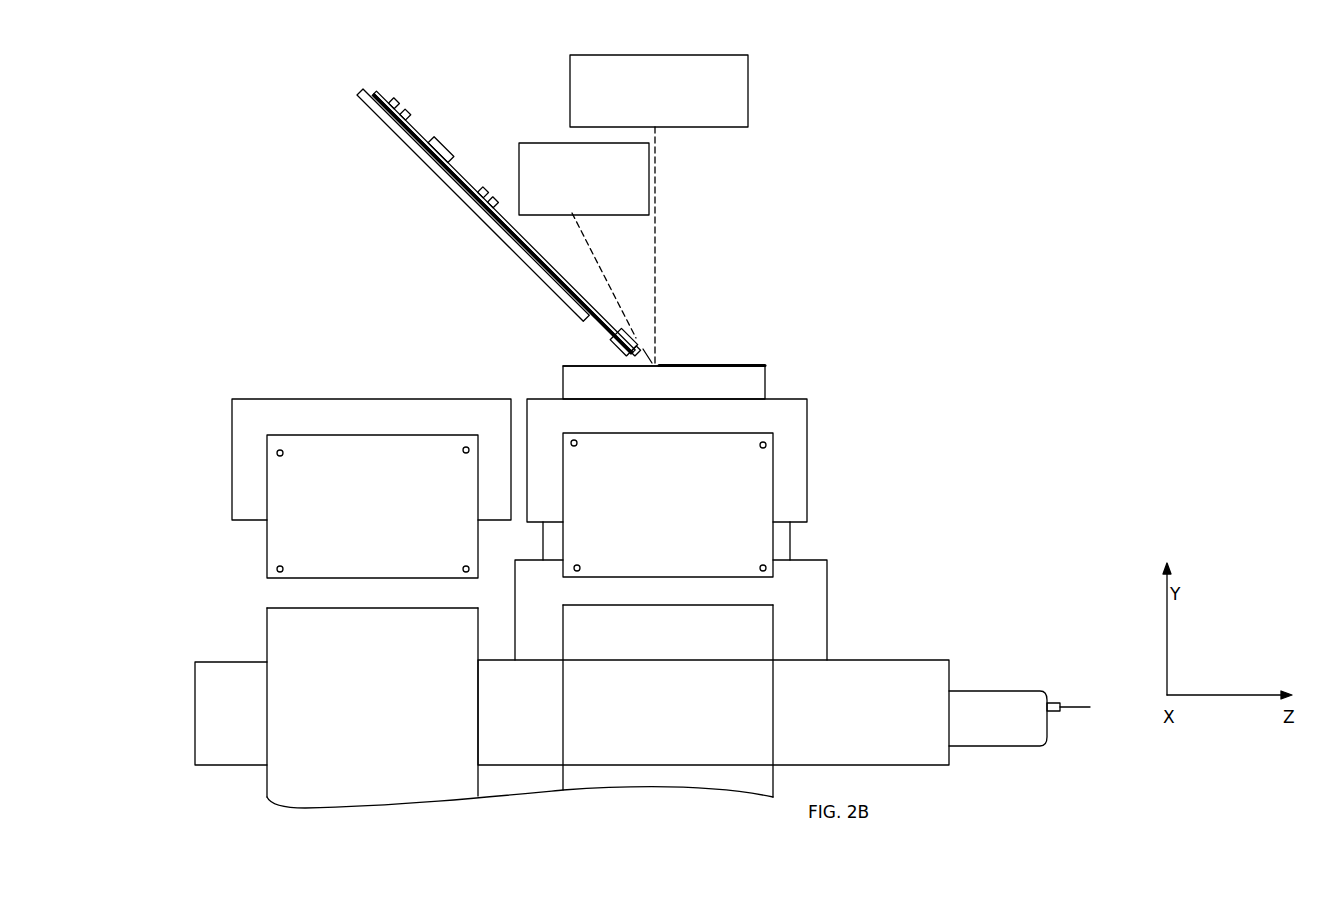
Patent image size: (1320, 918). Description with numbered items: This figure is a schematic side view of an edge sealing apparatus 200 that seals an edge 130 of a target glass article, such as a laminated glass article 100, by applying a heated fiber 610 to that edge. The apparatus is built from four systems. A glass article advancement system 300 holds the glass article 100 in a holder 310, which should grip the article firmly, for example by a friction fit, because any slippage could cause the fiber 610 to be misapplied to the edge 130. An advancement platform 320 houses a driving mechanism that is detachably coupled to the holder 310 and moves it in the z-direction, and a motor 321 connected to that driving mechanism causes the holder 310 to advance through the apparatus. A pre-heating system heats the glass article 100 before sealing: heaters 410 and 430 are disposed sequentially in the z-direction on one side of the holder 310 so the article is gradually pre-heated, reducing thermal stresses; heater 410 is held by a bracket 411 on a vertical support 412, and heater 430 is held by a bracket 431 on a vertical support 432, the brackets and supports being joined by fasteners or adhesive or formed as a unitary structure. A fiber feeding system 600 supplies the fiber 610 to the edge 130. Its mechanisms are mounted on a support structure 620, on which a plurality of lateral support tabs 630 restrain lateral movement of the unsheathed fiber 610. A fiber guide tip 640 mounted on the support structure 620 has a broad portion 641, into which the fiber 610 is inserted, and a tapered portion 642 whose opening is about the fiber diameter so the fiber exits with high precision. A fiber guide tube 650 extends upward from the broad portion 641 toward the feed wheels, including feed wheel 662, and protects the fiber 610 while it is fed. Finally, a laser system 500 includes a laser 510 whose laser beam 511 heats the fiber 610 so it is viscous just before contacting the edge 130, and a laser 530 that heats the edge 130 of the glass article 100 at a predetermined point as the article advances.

The laminated glass article 100 is at (758, 386).
The edge 130 is at (578, 366).
The edge sealing apparatus 200 is at (856, 110).
The glass article advancement system 300 is at (791, 666).
The holder 310 is at (812, 620).
The advancement platform 320 is at (950, 750).
The motor 321 is at (1046, 728).
The heater 410 is at (790, 455).
The bracket 411 is at (755, 488).
The vertical support 412 is at (580, 733).
The heater 430 is at (245, 460).
The bracket 431 is at (285, 553).
The vertical support 432 is at (296, 710).
The laser system 500 is at (642, 209).
The laser 510 is at (649, 178).
The laser beam 511 is at (600, 243).
The laser 530 is at (748, 96).
The fiber feeding system 600 is at (552, 236).
The fiber 610 is at (372, 92).
The support structure 620 is at (500, 235).
The lateral support tabs 630 is at (398, 103).
The fiber guide tip 640 is at (630, 332).
The broad portion 641 is at (638, 343).
The tapered portion 642 is at (643, 349).
The fiber guide tube 650 is at (445, 145).
The feed wheel 662 is at (429, 150).